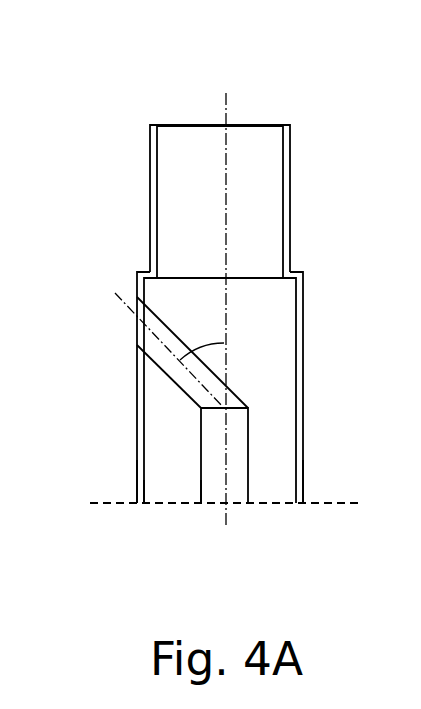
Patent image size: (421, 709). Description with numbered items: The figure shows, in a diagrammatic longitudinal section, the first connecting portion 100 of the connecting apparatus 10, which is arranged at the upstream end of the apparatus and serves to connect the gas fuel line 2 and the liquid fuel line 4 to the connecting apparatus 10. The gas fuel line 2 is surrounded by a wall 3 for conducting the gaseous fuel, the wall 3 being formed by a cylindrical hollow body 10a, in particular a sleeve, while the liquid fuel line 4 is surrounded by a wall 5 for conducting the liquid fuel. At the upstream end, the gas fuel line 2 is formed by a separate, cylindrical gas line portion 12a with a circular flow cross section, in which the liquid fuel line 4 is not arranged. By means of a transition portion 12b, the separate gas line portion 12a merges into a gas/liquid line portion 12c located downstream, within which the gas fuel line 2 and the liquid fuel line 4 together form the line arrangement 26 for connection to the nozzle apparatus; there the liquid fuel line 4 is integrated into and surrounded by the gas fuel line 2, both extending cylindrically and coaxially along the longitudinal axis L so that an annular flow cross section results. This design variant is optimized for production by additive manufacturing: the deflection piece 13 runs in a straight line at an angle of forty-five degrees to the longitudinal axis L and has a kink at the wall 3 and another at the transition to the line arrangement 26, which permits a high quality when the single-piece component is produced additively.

The gas fuel line 2 is at (203, 311).
The separate gas line portion 12a is at (292, 137).
The connecting apparatus 10 is at (203, 378).
The first connecting portion 100 is at (203, 378).
The transition portion 12b is at (302, 366).
The gas/liquid line portion 12c is at (303, 466).
The wall 5 is at (248, 433).
The deflection piece 13 is at (153, 341).
The liquid fuel line 4 is at (225, 423).
The wall 3 is at (186, 489).
The cylindrical hollow body 10a is at (137, 482).
The line arrangement 26 is at (164, 494).
The longitudinal axis L is at (230, 524).